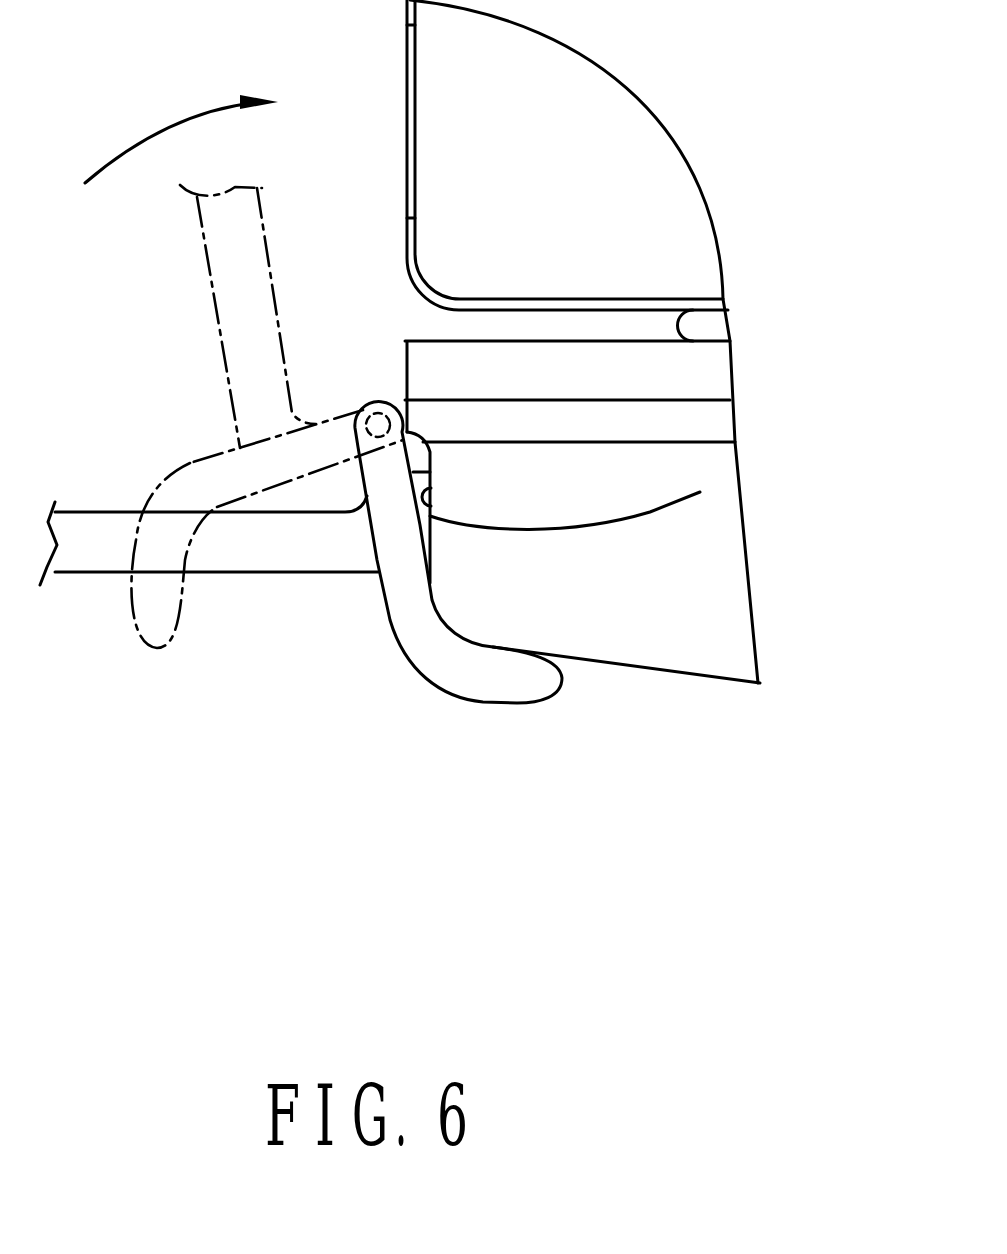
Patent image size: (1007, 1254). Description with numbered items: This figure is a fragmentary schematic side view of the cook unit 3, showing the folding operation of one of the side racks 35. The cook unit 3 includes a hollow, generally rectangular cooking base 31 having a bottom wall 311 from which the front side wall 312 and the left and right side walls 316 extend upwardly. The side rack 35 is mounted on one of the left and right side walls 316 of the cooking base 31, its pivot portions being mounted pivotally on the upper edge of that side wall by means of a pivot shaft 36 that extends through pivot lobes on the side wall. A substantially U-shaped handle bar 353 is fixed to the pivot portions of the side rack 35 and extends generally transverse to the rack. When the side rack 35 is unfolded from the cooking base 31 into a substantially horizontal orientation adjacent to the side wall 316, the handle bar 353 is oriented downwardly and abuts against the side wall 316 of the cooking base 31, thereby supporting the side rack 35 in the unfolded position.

The cook unit 3 is at (647, 418).
The cooking base 31 is at (647, 588).
The bottom wall 311 is at (595, 665).
The front side wall 312 is at (680, 575).
The left and right side walls 316 is at (700, 492).
The side rack 35 is at (210, 297).
The handle bar 353 is at (260, 490).
The pivot shaft 36 is at (376, 402).